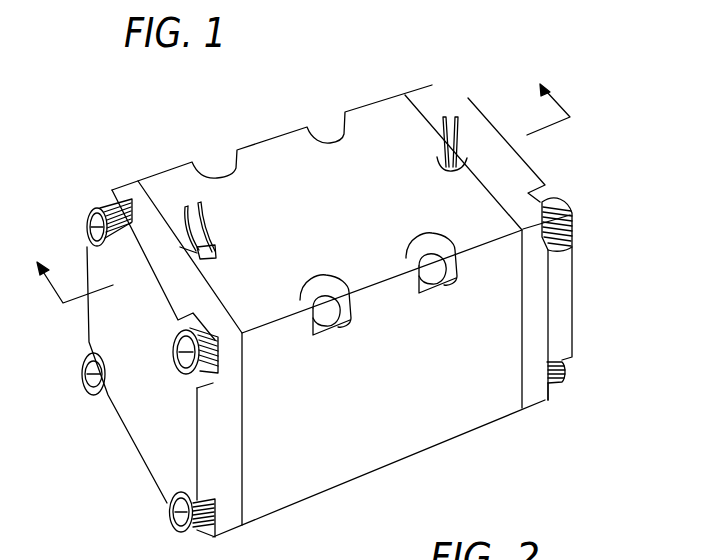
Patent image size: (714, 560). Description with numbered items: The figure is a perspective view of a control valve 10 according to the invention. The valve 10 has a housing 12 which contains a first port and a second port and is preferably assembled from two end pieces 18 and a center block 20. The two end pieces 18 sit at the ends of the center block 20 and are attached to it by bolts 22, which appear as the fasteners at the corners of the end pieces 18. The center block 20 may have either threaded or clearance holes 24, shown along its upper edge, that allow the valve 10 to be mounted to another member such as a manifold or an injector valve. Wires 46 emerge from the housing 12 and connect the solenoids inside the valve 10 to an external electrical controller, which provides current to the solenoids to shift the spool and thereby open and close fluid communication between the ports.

The control valve 10 is at (382, 66).
The housing 12 is at (402, 396).
The end pieces 18 is at (537, 168).
The center block 20 is at (265, 138).
The bolts 22 is at (170, 513).
The holes 24 is at (462, 262).
The wires 46 is at (210, 216).